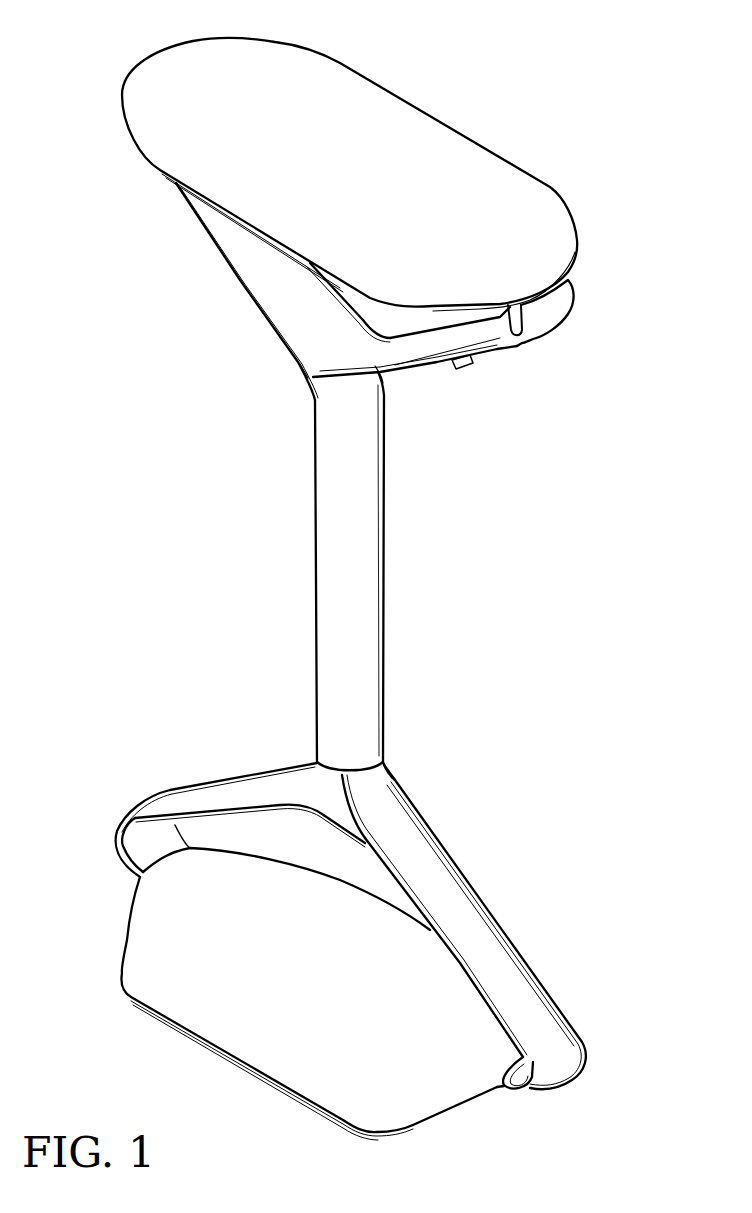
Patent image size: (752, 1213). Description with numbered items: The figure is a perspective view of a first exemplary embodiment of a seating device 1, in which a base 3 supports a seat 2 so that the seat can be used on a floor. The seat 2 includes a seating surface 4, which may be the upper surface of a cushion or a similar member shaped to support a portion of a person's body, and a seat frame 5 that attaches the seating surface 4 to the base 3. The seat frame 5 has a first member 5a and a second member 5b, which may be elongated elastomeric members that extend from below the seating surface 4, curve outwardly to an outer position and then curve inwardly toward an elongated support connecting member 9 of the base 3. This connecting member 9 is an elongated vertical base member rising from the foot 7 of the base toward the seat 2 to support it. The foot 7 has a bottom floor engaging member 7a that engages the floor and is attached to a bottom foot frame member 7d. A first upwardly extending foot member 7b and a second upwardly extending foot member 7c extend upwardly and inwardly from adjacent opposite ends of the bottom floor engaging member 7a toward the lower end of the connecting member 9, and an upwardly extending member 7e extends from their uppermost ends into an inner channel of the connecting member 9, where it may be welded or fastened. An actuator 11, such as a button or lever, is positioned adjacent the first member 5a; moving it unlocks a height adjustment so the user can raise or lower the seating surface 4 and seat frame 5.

The seating device 1 is at (638, 500).
The seat 2 is at (542, 137).
The base 3 is at (508, 892).
The seating surface 4 is at (408, 120).
The seat frame 5 is at (185, 266).
The first member 5a is at (553, 313).
The second member 5b is at (242, 268).
The foot 7 is at (225, 750).
The bottom floor engaging member 7a is at (432, 1097).
The first upwardly extending foot member 7b is at (513, 978).
The second upwardly extending foot member 7c is at (190, 792).
The bottom foot frame member 7d is at (522, 1105).
The upwardly extending member 7e is at (395, 764).
The elongated support connecting member 9 is at (380, 603).
The actuator 11 is at (473, 362).